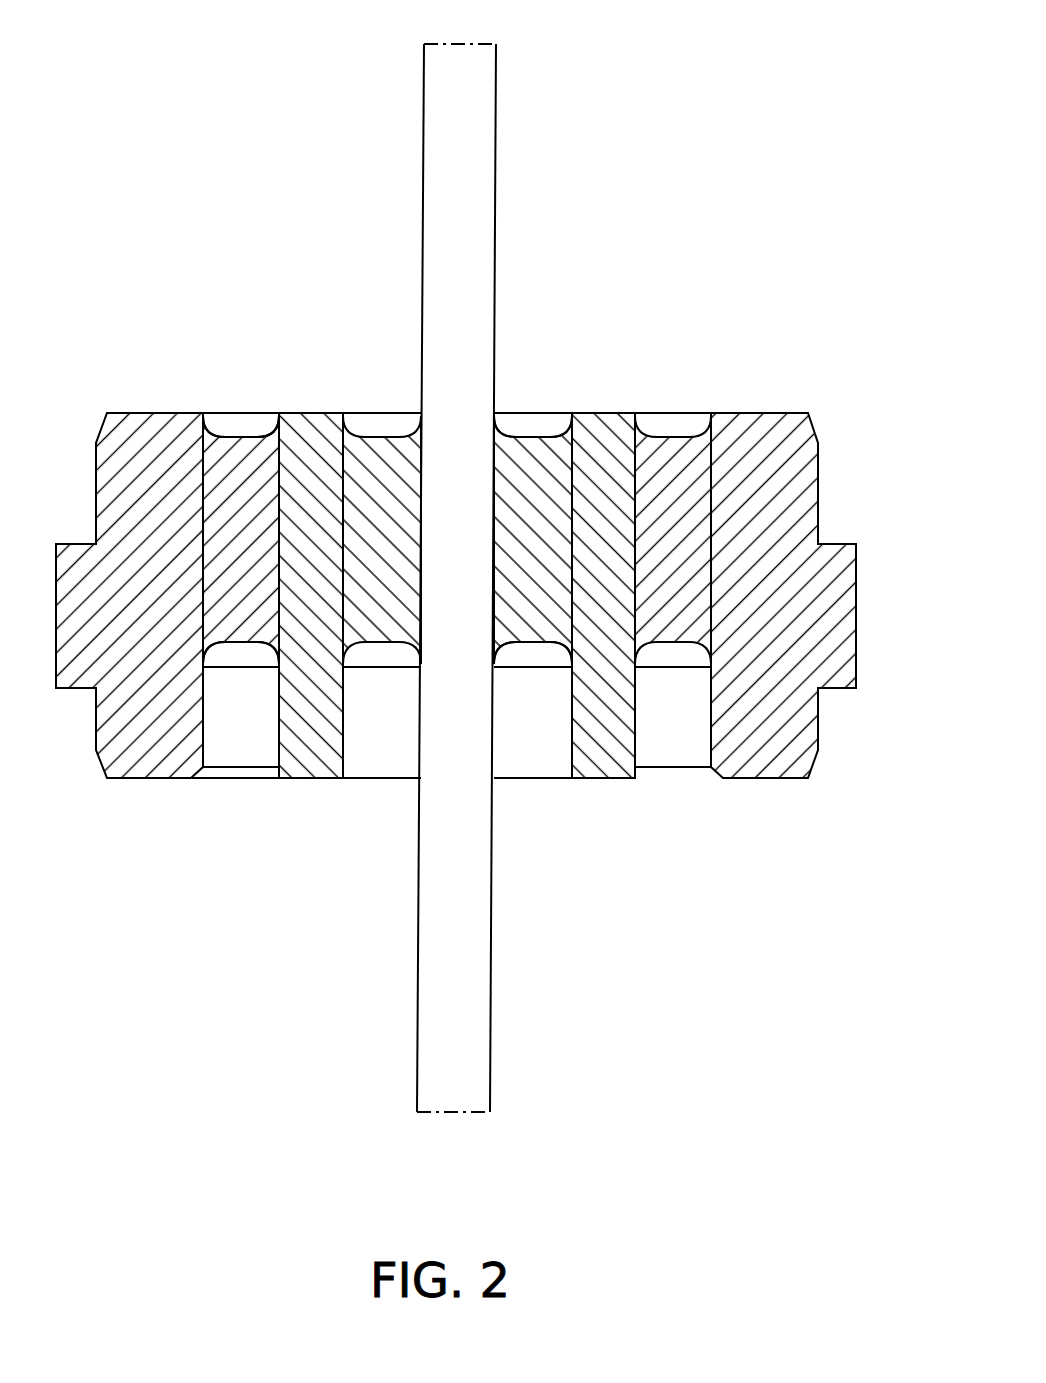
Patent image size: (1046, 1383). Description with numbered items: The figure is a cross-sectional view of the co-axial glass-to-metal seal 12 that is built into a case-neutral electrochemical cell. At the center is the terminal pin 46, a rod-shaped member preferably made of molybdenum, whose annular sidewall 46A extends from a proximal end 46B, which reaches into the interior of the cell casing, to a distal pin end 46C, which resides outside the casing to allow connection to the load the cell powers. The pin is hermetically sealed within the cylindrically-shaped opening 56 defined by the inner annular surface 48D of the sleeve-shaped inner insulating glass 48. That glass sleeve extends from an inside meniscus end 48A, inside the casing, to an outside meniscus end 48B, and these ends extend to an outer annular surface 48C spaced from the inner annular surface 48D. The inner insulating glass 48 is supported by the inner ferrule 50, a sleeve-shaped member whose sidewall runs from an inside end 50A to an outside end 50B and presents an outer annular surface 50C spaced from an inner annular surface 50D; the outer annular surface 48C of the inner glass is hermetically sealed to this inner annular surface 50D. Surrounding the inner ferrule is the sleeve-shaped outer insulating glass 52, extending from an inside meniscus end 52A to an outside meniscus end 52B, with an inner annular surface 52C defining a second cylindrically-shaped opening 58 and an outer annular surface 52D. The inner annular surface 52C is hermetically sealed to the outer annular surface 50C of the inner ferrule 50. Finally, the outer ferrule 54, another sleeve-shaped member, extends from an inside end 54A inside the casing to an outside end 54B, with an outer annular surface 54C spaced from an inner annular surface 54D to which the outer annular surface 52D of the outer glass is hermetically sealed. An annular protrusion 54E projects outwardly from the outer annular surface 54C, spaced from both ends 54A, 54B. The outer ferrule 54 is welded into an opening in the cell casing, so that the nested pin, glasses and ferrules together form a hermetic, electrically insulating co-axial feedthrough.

The co-axial glass-to-metal seal 12 is at (712, 185).
The terminal pin 46 is at (495, 188).
The annular sidewall 46A is at (490, 977).
The proximal end 46B is at (462, 1112).
The distal pin end 46C is at (468, 44).
The inner insulating glass 48 is at (545, 455).
The inside meniscus end 48A is at (527, 643).
The outside meniscus end 48B is at (540, 437).
The outer annular surface 48C is at (585, 572).
The inner annular surface 48D is at (482, 460).
The inner ferrule 50 is at (583, 697).
The inside end 50A is at (605, 778).
The outside end 50B is at (618, 413).
The outer annular surface 50C is at (648, 681).
The inner annular surface 50D is at (559, 750).
The outer insulating glass 52 is at (670, 437).
The inside meniscus end 52A is at (237, 648).
The outside meniscus end 52B is at (240, 436).
The inner annular surface 52C is at (288, 455).
The outer annular surface 52D is at (192, 456).
The outer ferrule 54 is at (797, 732).
The inside end 54A is at (765, 778).
The outside end 54B is at (775, 413).
The outer annular surface 54C is at (832, 500).
The inner annular surface 54D is at (698, 746).
The annular protrusion 54E is at (857, 606).
The cylindrically-shaped opening 56 is at (503, 425).
The cylindrically-shaped opening 58 is at (270, 439).